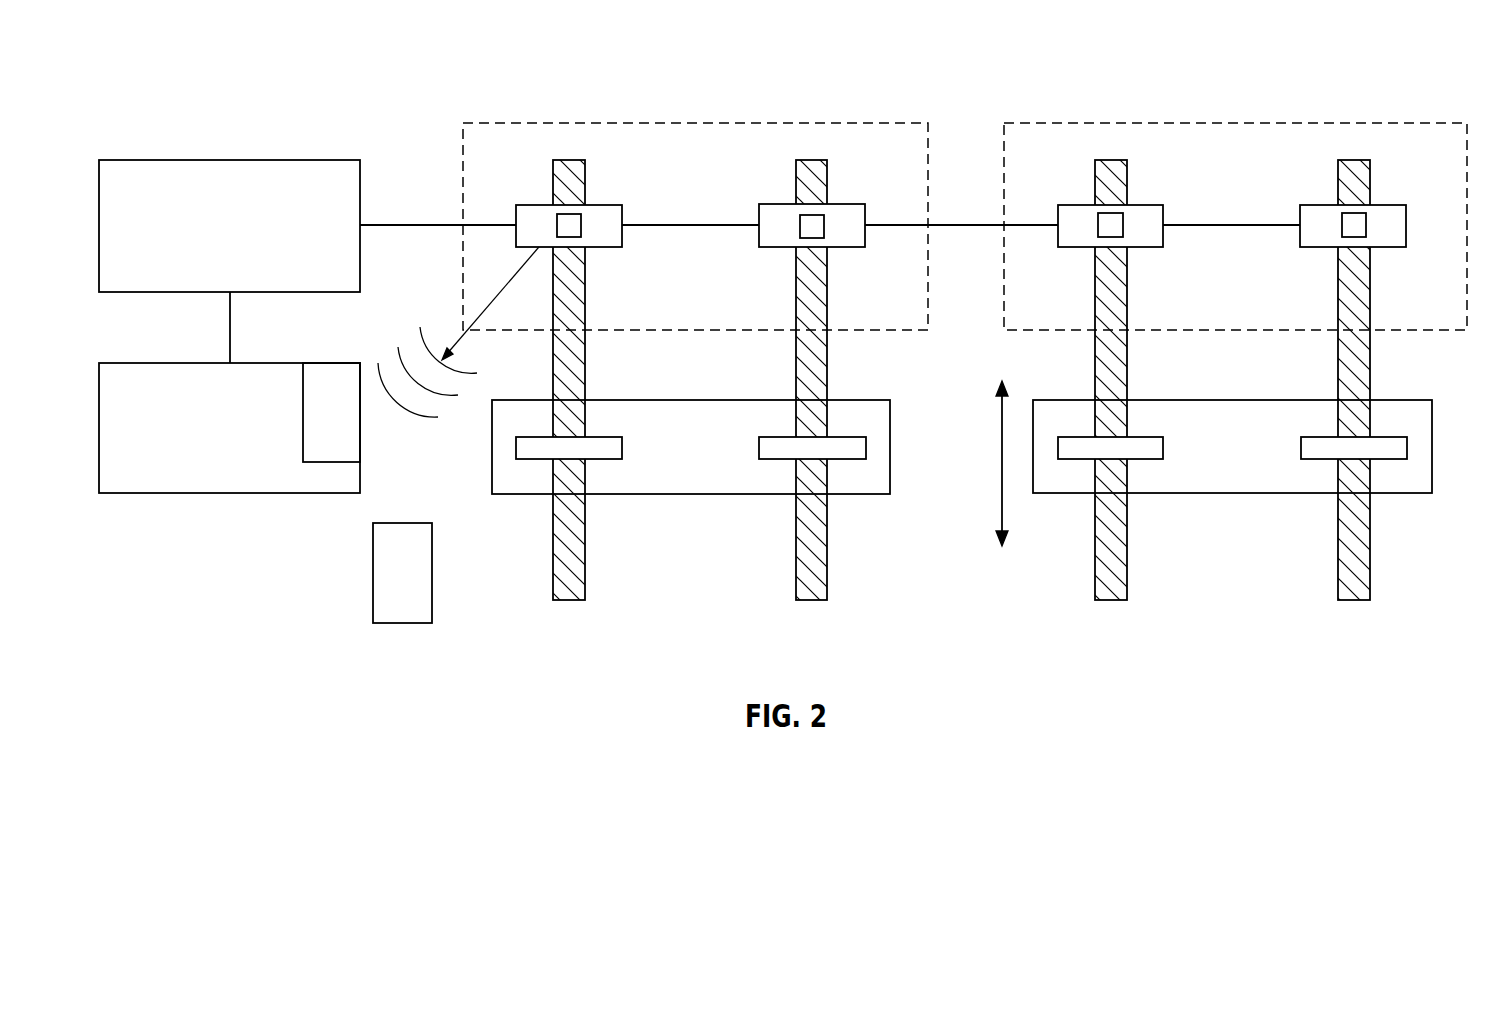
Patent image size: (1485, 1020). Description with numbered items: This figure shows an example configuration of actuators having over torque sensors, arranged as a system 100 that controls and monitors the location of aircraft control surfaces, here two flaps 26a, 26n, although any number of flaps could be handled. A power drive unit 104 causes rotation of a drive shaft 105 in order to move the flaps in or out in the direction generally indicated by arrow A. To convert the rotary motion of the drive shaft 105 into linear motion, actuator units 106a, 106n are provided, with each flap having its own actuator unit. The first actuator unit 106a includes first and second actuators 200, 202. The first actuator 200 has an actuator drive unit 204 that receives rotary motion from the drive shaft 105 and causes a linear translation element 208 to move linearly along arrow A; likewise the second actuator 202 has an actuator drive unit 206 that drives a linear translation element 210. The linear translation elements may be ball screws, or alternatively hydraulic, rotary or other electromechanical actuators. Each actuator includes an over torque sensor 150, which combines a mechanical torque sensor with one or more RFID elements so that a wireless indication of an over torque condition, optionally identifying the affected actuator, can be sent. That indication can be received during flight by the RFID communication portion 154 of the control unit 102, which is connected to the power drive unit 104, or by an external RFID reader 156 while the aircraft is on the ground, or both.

The system 100 is at (450, 47).
The control unit 102 is at (180, 363).
The power drive unit 104 is at (180, 160).
The drive shaft 105 is at (420, 225).
The first actuator unit 106a is at (688, 123).
The actuator unit 106n is at (1247, 123).
The over torque sensor 150 is at (557, 224).
The RFID communication portion 154 is at (330, 462).
The external RFID reader 156 is at (402, 523).
The first actuator 200 is at (608, 374).
The second actuator 202 is at (802, 374).
The actuator drive unit 204 is at (622, 240).
The actuator drive unit 206 is at (759, 220).
The linear translation element 208 is at (587, 312).
The linear translation element 210 is at (828, 312).
The flap 26a is at (690, 494).
The flap 26n is at (1230, 494).
The arrow A is at (1002, 465).